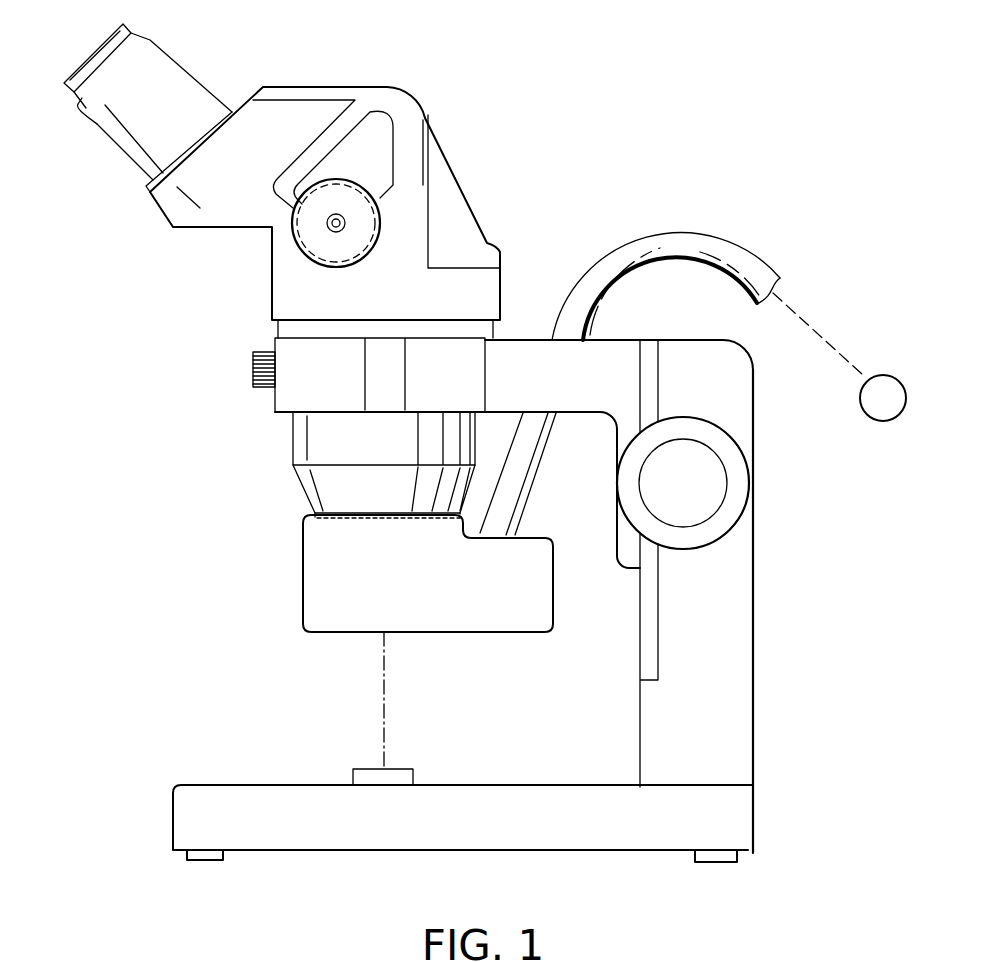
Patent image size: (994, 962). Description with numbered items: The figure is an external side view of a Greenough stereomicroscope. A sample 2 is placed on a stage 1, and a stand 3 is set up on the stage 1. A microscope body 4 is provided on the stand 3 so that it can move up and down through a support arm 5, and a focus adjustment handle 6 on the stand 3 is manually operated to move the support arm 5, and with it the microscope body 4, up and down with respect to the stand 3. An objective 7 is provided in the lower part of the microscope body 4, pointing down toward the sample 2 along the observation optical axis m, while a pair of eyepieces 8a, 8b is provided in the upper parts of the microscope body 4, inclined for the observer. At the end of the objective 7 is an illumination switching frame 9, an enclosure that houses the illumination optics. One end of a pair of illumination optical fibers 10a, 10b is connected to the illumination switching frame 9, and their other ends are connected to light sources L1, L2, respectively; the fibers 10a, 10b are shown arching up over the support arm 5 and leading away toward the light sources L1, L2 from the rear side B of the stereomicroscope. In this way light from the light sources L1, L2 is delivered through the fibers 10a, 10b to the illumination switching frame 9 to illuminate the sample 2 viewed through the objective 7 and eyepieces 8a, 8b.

The stage 1 is at (222, 790).
The sample 2 is at (395, 770).
The stand 3 is at (742, 402).
The microscope body 4 is at (218, 348).
The support arm 5 is at (612, 345).
The focus adjustment handle 6 is at (717, 485).
The objective 7 is at (308, 488).
The eyepiece 8a is at (137, 163).
The eyepiece 8b is at (148, 68).
The illumination switching frame 9 is at (303, 598).
The illumination optical fiber 10a is at (678, 240).
The illumination optical fiber 10b is at (670, 298).
The light source L1 is at (885, 422).
The light source L2 is at (818, 334).
The rear side B is at (783, 655).
The observation optical axis m is at (328, 700).